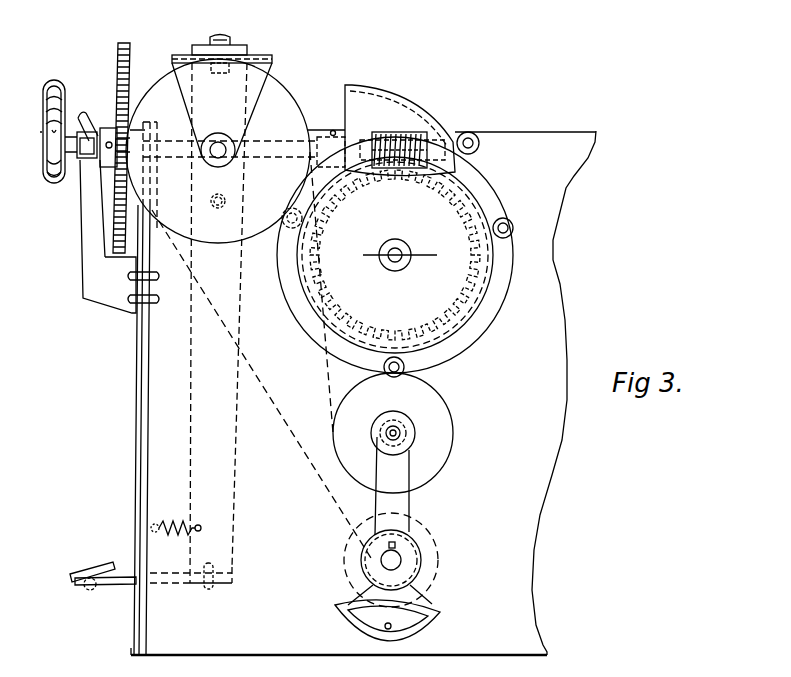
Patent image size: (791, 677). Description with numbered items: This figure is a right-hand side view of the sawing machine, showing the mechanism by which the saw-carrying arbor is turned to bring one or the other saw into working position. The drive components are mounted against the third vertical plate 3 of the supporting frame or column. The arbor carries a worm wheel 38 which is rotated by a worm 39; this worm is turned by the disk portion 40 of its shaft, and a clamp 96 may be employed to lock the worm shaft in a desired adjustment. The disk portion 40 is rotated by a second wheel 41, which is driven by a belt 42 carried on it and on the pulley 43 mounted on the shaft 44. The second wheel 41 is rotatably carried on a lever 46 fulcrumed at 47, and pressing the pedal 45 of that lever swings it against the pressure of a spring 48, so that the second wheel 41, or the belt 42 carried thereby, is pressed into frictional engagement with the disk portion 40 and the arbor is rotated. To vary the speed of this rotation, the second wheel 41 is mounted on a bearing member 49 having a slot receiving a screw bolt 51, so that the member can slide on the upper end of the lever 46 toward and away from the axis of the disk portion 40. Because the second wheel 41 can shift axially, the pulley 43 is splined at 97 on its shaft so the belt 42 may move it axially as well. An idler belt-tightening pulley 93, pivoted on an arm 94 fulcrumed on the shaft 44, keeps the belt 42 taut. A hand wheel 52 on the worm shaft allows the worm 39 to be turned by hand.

The third vertical plate 3 is at (363, 388).
The worm wheel 38 is at (395, 231).
The worm 39 is at (388, 131).
The disk portion 40 is at (133, 76).
The second wheel 41 is at (221, 151).
The belt 42 is at (290, 414).
The pulley 43 is at (372, 573).
The shaft 44 is at (390, 570).
The pedal 45 is at (77, 571).
The lever 46 is at (198, 326).
The fulcrum 47 is at (216, 210).
The spring 48 is at (163, 520).
The bearing member 49 is at (222, 101).
The screw bolt 51 is at (232, 38).
The hand wheel 52 is at (50, 210).
The idler belt-tightening pulley 93 is at (393, 433).
The arm 94 is at (410, 507).
The clamp 96 is at (89, 113).
The spline 97 is at (395, 545).